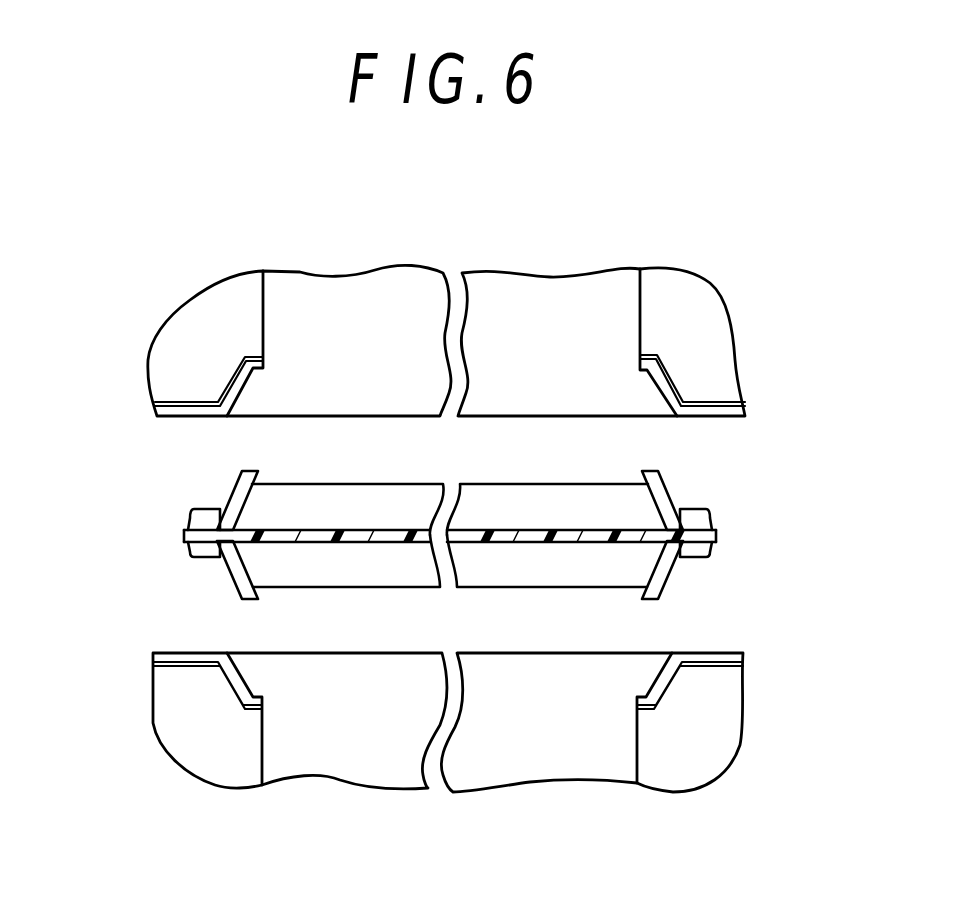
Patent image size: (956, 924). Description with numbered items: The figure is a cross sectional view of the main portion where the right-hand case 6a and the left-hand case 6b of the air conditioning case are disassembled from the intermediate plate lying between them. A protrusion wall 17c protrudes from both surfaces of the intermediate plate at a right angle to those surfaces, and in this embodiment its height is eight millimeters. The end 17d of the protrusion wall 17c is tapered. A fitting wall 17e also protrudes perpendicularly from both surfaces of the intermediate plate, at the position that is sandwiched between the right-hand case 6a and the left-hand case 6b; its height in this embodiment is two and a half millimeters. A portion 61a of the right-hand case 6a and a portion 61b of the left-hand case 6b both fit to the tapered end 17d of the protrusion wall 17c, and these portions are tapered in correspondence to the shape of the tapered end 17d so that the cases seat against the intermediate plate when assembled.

The right-hand case 6a is at (312, 300).
The portion of the right-hand case 61a is at (233, 384).
The left-hand case 6b is at (337, 755).
The portion of the left-hand case 61b is at (240, 680).
The protrusion wall 17c is at (333, 505).
The end of the protrusion wall 17d is at (262, 512).
The fitting wall 17e is at (243, 477).